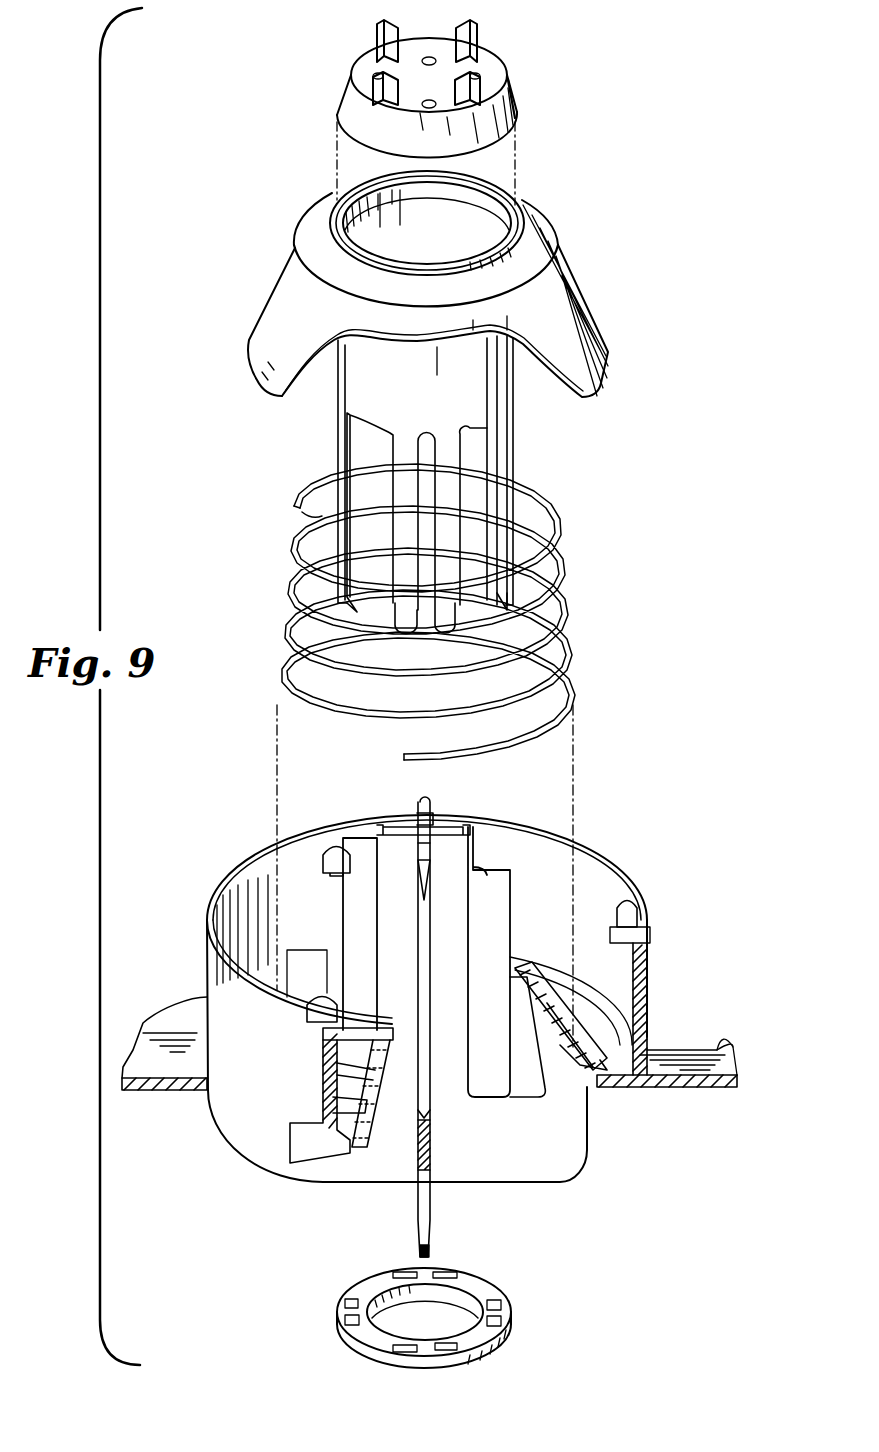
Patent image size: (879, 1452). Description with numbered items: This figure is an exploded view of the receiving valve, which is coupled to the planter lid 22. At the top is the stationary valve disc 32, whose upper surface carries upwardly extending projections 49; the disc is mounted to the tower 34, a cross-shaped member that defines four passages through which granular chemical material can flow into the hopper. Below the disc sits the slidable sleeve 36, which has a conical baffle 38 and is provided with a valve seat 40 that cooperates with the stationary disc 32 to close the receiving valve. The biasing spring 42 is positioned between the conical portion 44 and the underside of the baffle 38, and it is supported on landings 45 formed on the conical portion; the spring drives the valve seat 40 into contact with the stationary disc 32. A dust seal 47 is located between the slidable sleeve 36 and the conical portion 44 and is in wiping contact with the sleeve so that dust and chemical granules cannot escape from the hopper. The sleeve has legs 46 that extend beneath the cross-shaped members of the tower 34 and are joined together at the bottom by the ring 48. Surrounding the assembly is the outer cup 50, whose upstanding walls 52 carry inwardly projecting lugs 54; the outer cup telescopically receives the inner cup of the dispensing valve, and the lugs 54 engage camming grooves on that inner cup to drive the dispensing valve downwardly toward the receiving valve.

The planter lid 22 is at (650, 985).
The stationary valve disc 32 is at (508, 100).
The tower 34 is at (458, 913).
The slidable sleeve 36 is at (517, 388).
The conical baffle 38 is at (585, 290).
The valve seat 40 is at (500, 194).
The biasing spring 42 is at (552, 570).
The conical portion 44 is at (373, 1127).
The landings 45 is at (580, 1062).
The legs 46 is at (338, 441).
The dust seal 47 is at (533, 978).
The ring 48 is at (513, 1312).
The upwardly extending projections 49 is at (373, 78).
The outer cup 50 is at (690, 918).
The upstanding walls 52 is at (648, 968).
The inwardly projecting lugs 54 is at (352, 838).